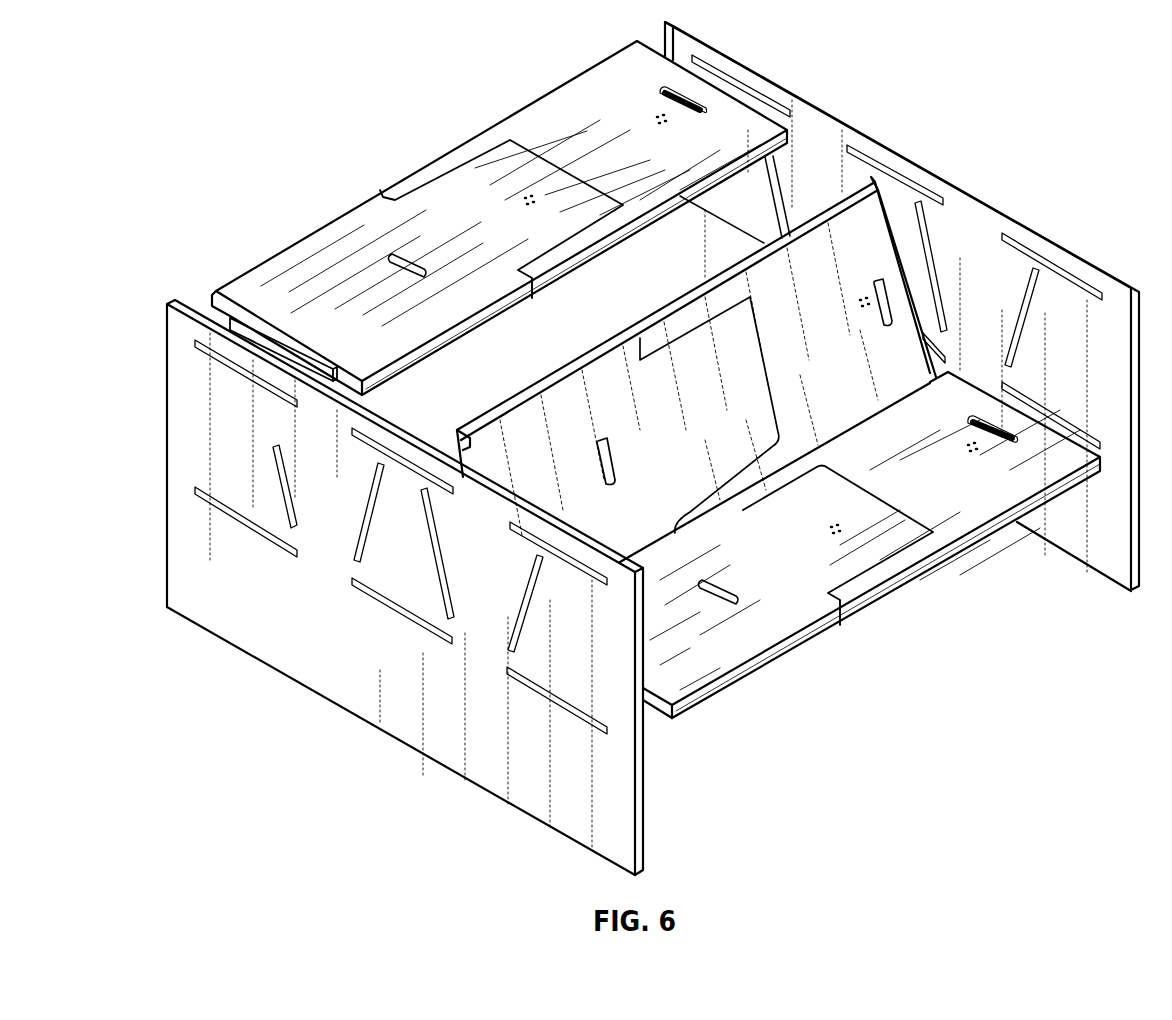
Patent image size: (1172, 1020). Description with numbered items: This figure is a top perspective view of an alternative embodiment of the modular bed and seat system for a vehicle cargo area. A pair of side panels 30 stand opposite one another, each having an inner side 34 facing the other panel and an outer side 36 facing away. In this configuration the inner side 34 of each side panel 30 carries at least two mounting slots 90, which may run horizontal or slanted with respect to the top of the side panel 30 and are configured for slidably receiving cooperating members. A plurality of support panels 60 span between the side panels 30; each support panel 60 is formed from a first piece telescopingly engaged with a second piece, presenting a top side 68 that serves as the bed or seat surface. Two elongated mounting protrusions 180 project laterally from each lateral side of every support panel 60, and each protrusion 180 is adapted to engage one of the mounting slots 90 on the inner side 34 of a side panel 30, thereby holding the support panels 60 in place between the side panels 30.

The side panel 30 is at (1100, 535).
The inner side 34 is at (952, 214).
The outer side 36 is at (440, 740).
The support panel 60 is at (300, 248).
The top side 68 is at (568, 112).
The mounting slot 90 is at (866, 150).
The elongated mounting protrusion 180 is at (255, 325).